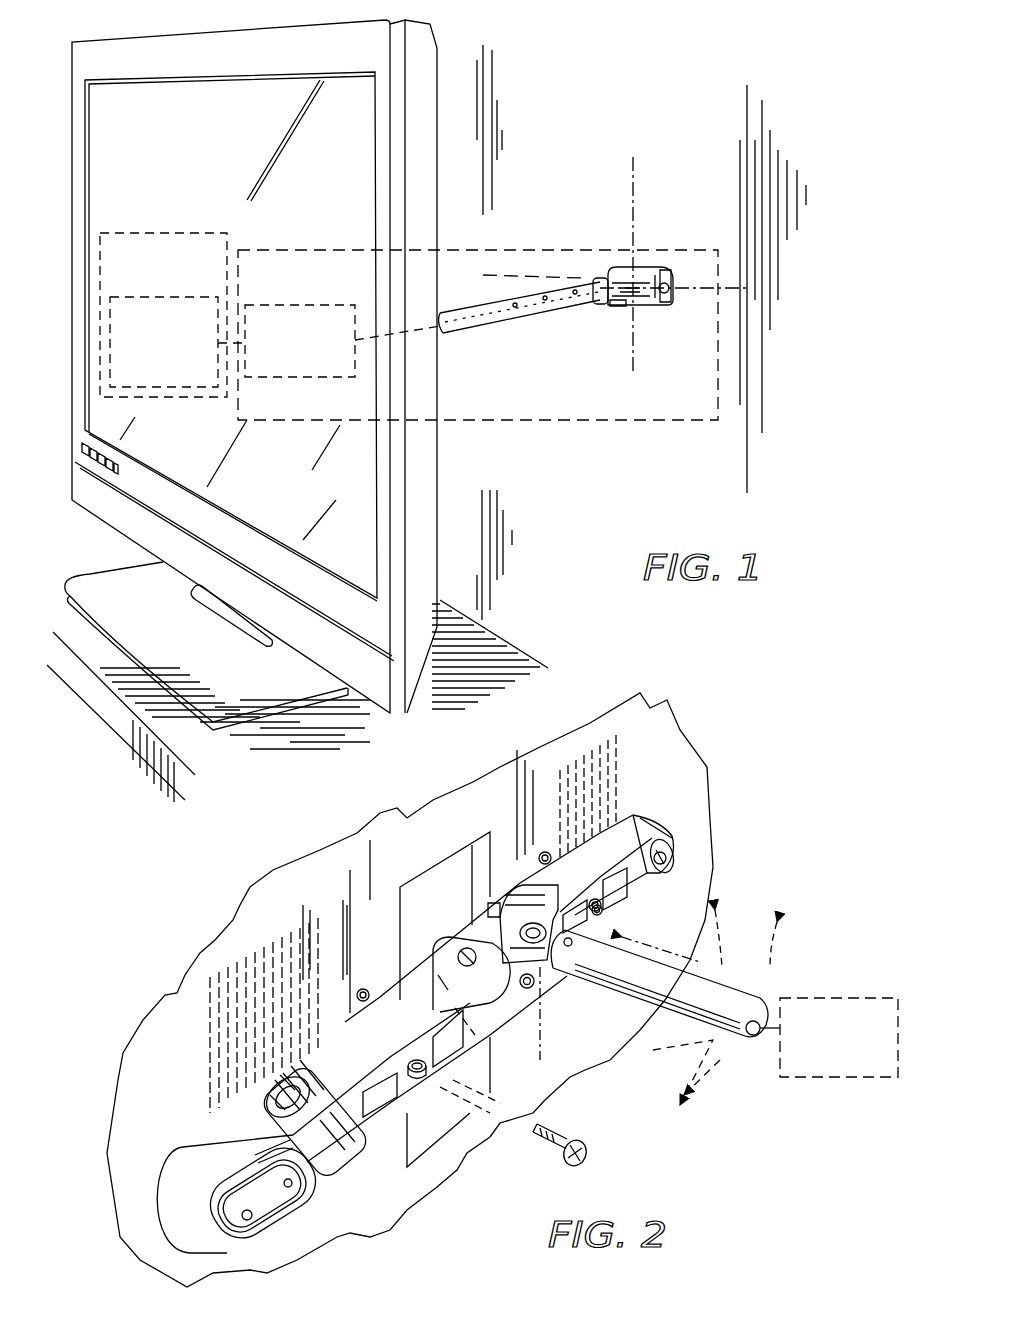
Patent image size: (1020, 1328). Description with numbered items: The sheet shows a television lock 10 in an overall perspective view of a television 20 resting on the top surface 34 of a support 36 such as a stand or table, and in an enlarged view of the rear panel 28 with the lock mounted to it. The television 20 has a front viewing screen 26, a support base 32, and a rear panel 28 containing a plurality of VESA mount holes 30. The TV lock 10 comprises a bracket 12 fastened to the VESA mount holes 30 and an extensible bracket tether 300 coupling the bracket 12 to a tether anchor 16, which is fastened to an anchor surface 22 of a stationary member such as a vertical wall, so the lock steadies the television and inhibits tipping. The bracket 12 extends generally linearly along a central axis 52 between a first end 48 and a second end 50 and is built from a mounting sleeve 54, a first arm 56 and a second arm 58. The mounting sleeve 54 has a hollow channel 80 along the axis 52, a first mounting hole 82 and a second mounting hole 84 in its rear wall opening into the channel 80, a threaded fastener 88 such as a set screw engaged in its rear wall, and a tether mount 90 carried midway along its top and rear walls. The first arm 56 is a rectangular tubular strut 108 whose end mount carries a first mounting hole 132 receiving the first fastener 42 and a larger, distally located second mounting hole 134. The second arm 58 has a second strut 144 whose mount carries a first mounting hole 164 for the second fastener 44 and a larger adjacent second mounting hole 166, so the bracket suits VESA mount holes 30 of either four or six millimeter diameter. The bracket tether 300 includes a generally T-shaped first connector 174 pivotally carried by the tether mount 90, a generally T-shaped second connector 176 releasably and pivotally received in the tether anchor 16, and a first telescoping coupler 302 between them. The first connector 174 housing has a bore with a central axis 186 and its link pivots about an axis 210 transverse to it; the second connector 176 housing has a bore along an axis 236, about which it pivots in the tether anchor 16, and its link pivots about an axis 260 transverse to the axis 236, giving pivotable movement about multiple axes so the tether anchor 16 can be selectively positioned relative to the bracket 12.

In FIG. 1, the television lock 10 is at (558, 424).
In FIG. 2, the television lock 10 is at (802, 911).
In FIG. 1, the bracket 12 is at (287, 383).
In FIG. 2, the bracket 12 is at (688, 850).
In FIG. 1, the tether anchor 16 is at (668, 312).
In FIG. 2, the tether anchor 16 is at (847, 1078).
In FIG. 1, the television 20 is at (70, 158).
In FIG. 2, the television 20 is at (732, 755).
In FIG. 1, the anchor surface 22 is at (672, 277).
In FIG. 1, the front viewing screen 26 is at (108, 123).
In FIG. 1, the rear panel 28 is at (100, 280).
In FIG. 2, the rear panel 28 is at (660, 716).
In FIG. 1, the VESA mount holes 30 is at (110, 337).
In FIG. 2, the VESA mount holes 30 is at (540, 852).
In FIG. 1, the support base 32 is at (132, 574).
In FIG. 1, the top surface 34 is at (520, 653).
In FIG. 1, the support 36 is at (158, 782).
In FIG. 2, the first fastener 42 is at (588, 1148).
In FIG. 2, the second fastener 44 is at (585, 932).
In FIG. 2, the first end 48 is at (157, 1195).
In FIG. 2, the second end 50 is at (644, 846).
In FIG. 2, the central axis 52 is at (655, 817).
In FIG. 2, the mounting sleeve 54 is at (475, 1030).
In FIG. 2, the first arm 56 is at (188, 1170).
In FIG. 2, the second arm 58 is at (680, 825).
In FIG. 2, the channel 80 is at (295, 1086).
In FIG. 2, the first mounting hole 82 is at (421, 1080).
In FIG. 2, the second mounting hole 84 is at (598, 900).
In FIG. 2, the threaded fastener 88 is at (533, 985).
In FIG. 2, the tether mount 90 is at (443, 947).
In FIG. 2, the tubular strut 108 is at (300, 1108).
In FIG. 2, the first mounting hole 132 is at (292, 1184).
In FIG. 2, the second mounting hole 134 is at (252, 1215).
In FIG. 2, the second strut 144 is at (330, 1085).
In FIG. 2, the first mounting hole 164 is at (672, 862).
In FIG. 2, the second mounting hole 166 is at (675, 857).
In FIG. 2, the first connector 174 is at (495, 916).
In FIG. 1, the second connector 176 is at (618, 316).
In FIG. 2, the central axis 186 is at (443, 983).
In FIG. 2, the axis 210 is at (547, 1037).
In FIG. 1, the axis 236 is at (533, 276).
In FIG. 1, the axis 260 is at (641, 175).
In FIG. 1, the bracket tether 300 is at (524, 327).
In FIG. 2, the bracket tether 300 is at (764, 989).
In FIG. 1, the first telescoping coupler 302 is at (470, 334).
In FIG. 2, the first telescoping coupler 302 is at (733, 1038).